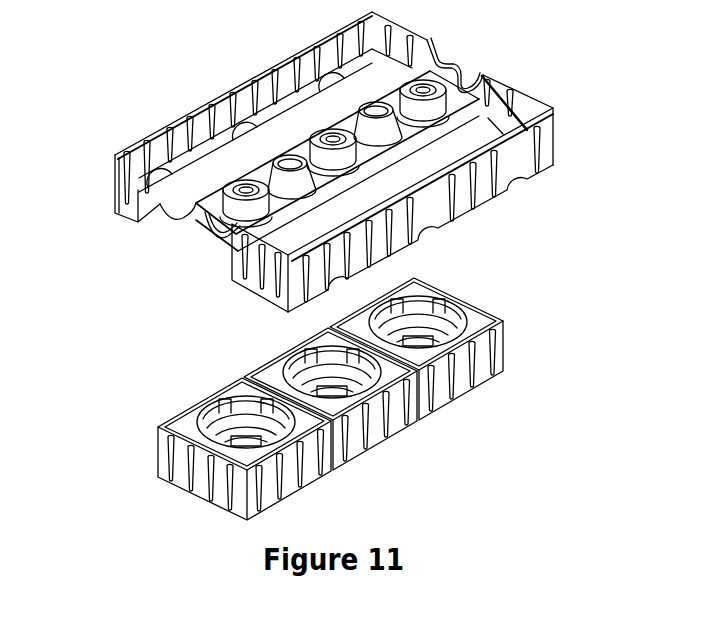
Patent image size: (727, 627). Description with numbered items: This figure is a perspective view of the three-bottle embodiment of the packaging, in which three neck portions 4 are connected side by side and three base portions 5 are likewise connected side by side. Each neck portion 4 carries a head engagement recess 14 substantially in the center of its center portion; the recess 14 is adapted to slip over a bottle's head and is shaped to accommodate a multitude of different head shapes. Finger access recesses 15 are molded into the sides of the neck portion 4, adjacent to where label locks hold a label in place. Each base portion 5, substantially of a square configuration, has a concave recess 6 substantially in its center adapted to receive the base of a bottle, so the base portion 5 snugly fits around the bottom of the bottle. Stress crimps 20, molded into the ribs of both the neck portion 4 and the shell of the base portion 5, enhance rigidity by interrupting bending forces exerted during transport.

The neck portion 4 is at (157, 122).
The base portion 5 is at (182, 427).
The concave recess 6 is at (423, 343).
The head engagement recess 14 is at (440, 108).
The finger access recesses 15 is at (210, 213).
The stress crimps 20 is at (478, 170).